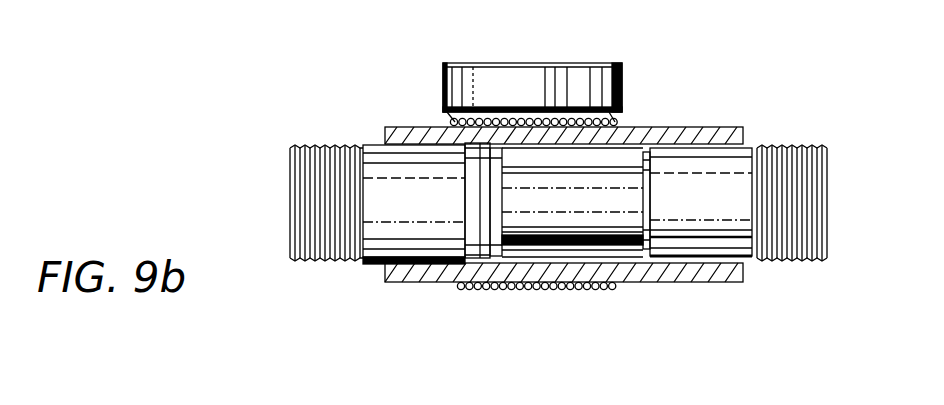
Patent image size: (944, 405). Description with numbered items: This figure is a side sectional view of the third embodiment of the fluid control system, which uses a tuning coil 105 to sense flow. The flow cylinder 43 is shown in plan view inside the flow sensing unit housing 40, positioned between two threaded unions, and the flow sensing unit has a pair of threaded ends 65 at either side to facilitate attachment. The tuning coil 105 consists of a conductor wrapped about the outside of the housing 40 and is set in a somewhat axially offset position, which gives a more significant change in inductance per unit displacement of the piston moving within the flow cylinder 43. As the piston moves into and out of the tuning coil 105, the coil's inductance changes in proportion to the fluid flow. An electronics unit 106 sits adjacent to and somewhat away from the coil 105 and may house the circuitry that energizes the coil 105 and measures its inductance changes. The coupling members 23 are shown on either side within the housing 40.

The cylindrical coupling member 23 is at (393, 227).
The flow sensing unit housing 40 is at (675, 127).
The flow cylinder 43 is at (540, 207).
The threaded ends 65 is at (323, 163).
The tuning coil 105 is at (582, 288).
The electronics unit 106 is at (587, 62).